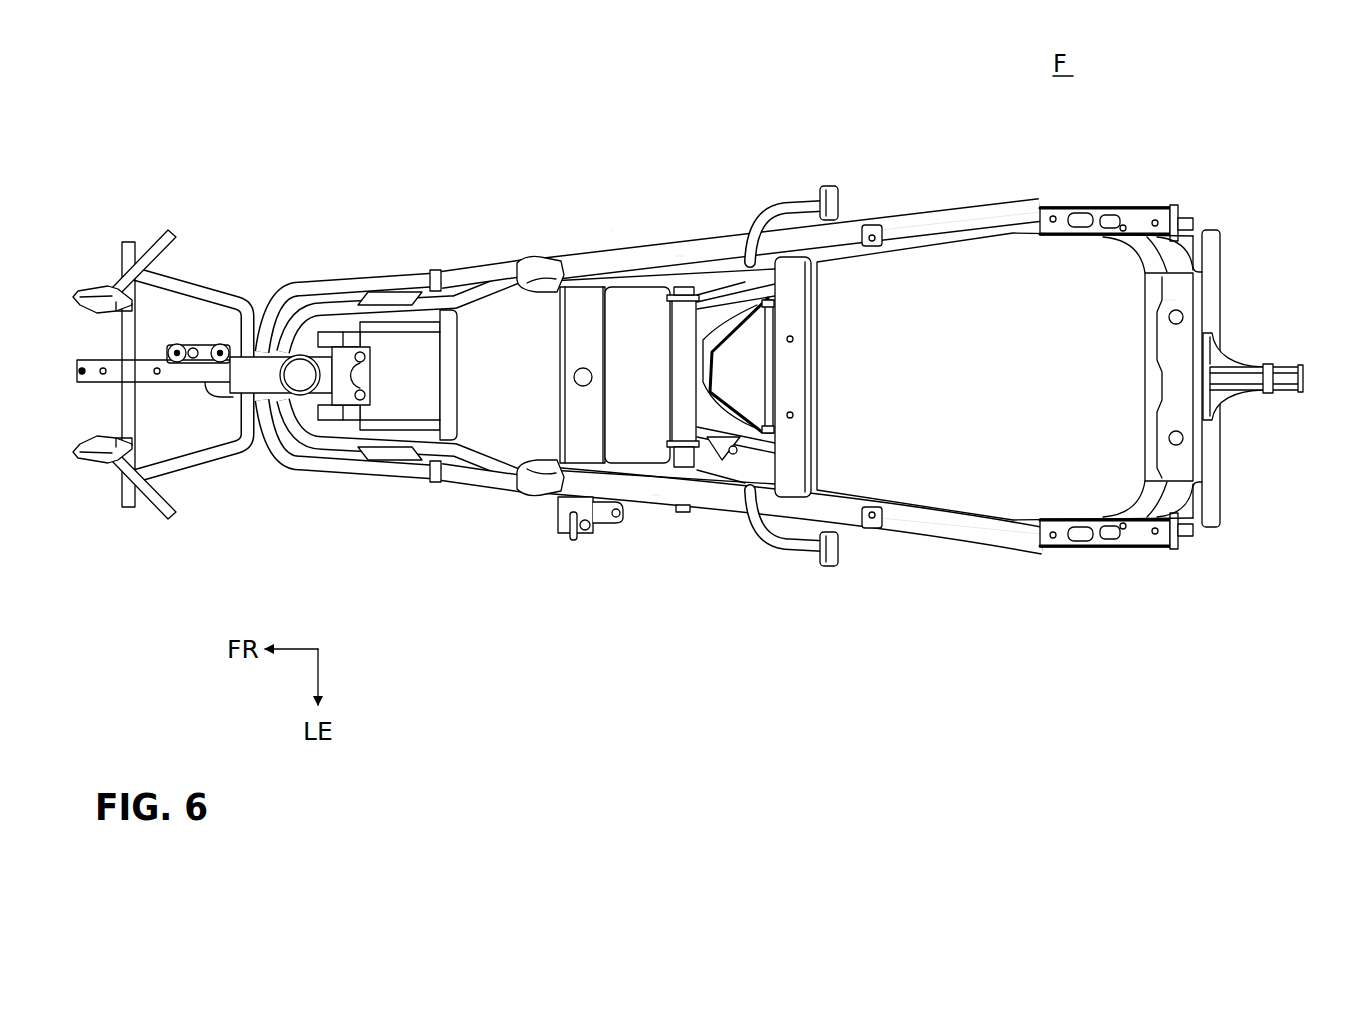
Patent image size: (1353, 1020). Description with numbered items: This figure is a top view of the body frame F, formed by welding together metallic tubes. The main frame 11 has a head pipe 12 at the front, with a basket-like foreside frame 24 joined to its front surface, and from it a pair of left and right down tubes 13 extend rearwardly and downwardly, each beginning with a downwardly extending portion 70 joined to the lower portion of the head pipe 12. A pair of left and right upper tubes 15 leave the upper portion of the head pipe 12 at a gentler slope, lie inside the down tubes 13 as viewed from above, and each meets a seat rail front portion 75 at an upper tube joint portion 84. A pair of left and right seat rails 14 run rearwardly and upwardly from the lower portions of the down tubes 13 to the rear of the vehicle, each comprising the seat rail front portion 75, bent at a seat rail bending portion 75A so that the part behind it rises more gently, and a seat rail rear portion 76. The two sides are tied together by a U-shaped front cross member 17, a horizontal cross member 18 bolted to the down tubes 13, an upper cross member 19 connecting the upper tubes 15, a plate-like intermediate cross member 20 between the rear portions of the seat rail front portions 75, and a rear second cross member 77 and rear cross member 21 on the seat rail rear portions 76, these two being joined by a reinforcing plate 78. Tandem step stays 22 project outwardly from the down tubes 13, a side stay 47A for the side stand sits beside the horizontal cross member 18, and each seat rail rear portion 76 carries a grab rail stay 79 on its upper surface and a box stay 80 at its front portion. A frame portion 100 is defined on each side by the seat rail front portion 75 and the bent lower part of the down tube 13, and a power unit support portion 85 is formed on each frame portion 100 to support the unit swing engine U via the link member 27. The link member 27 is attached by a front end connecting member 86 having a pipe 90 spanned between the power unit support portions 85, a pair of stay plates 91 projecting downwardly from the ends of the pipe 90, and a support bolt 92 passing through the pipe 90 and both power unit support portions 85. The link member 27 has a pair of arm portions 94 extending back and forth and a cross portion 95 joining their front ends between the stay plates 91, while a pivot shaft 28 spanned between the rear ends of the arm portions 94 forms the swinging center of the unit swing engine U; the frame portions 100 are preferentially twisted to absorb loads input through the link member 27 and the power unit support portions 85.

The main frame 11 is at (612, 226).
The head pipe 12 is at (273, 382).
The down tube 13 is at (365, 270).
The seat rail 14 is at (700, 239).
The upper tube 15 is at (437, 305).
The front cross member 17 is at (380, 338).
The horizontal cross member 18 is at (572, 354).
The upper cross member 19 is at (458, 400).
The intermediate cross member 20 is at (811, 377).
The rear cross member 21 is at (1210, 437).
The tandem step stay 22 is at (803, 206).
The foreside frame 24 is at (177, 262).
The link member 27 is at (703, 400).
The pivot shaft 28 is at (800, 355).
The side stay 47A is at (590, 535).
The downwardly extending portion 70 is at (327, 282).
The seat rail front portion 75 is at (642, 260).
The seat rail bending portion 75A is at (722, 256).
The seat rail rear portion 76 is at (920, 227).
The rear second cross member 77 is at (1140, 370).
The reinforcing plate 78 is at (1168, 300).
The grab rail stay 79 is at (1130, 214).
The box stay 80 is at (868, 225).
The upper tube joint portion 84 is at (533, 265).
The power unit support portion 85 is at (743, 282).
The front end connecting member 86 is at (668, 338).
The pipe 90 is at (676, 368).
The stay plate 91 is at (668, 297).
The support bolt 92 is at (683, 514).
The arm portion 94 is at (774, 310).
The cross portion 95 is at (703, 361).
The frame portion 100 is at (679, 240).